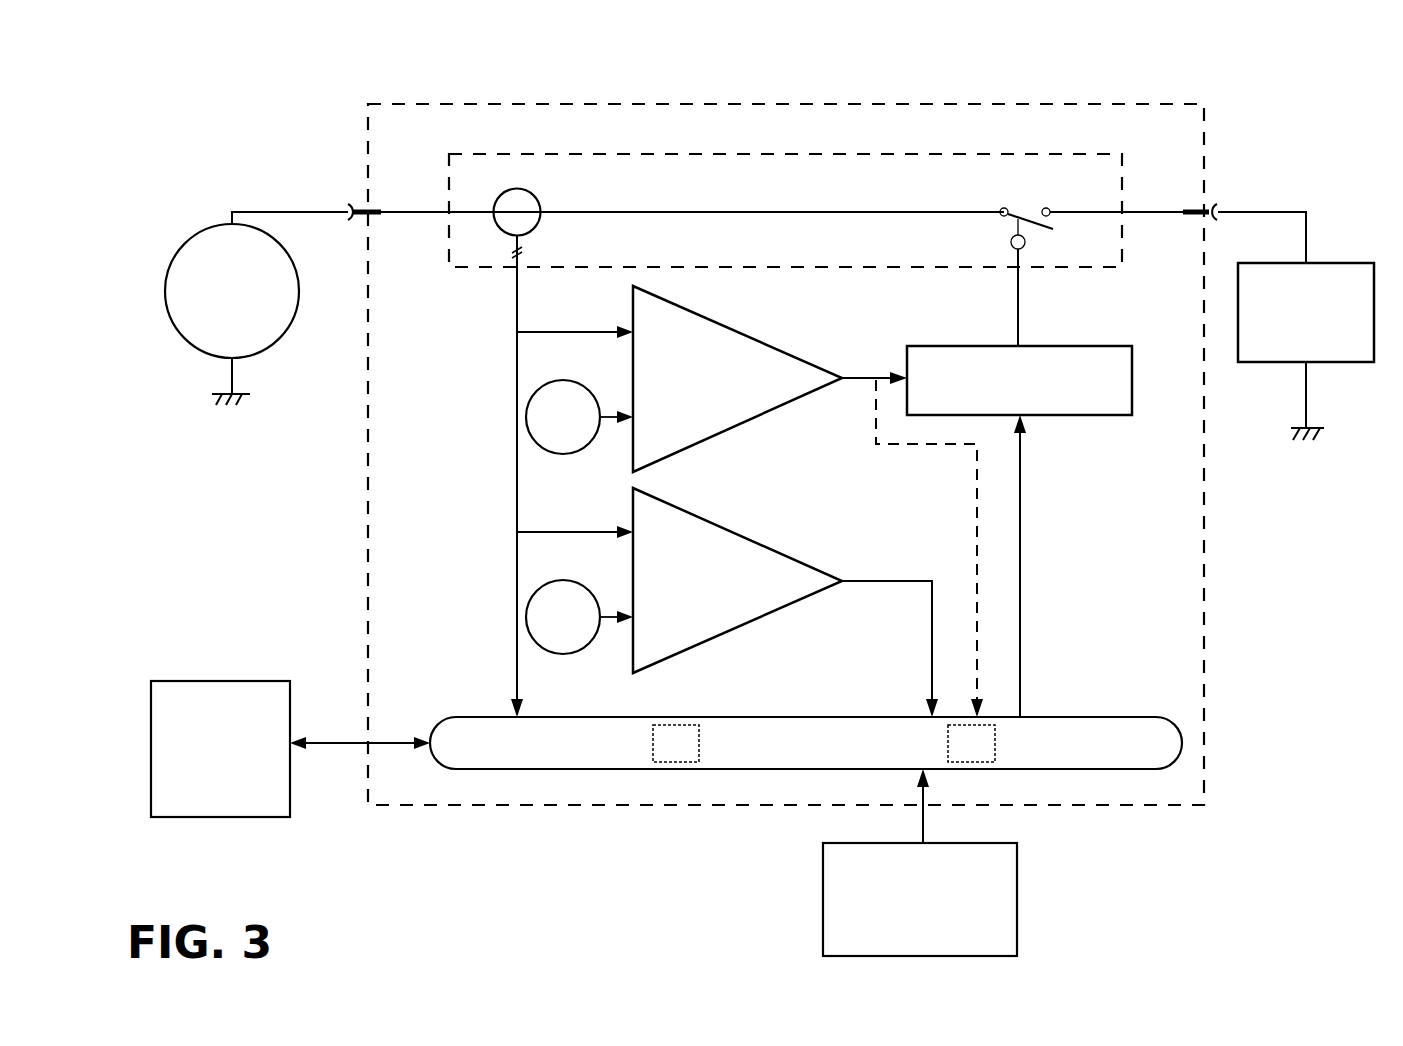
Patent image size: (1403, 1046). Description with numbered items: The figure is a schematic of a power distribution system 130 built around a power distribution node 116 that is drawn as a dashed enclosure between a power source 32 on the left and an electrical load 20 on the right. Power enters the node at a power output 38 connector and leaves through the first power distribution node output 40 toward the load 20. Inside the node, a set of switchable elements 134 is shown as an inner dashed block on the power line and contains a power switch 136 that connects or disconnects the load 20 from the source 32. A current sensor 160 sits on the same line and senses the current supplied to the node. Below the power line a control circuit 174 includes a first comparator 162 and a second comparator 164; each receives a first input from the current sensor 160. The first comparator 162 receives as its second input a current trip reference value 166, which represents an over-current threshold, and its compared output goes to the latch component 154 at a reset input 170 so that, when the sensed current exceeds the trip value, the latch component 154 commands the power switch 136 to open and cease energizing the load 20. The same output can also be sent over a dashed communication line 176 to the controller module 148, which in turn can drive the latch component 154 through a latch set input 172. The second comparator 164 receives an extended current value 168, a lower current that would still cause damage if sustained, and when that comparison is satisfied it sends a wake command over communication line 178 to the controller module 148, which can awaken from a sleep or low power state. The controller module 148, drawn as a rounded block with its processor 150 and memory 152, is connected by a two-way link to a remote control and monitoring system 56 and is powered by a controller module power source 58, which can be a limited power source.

The electrical load 20 is at (1324, 322).
The power source 32 is at (246, 304).
The power output 38 is at (1136, 205).
The first power distribution node output 40 is at (1224, 203).
The remote control and monitoring system 56 is at (236, 803).
The controller module power source 58 is at (1020, 898).
The power distribution node 116 is at (1135, 93).
The power distribution system 130 is at (804, 68).
The set of switchable elements 134 is at (996, 148).
The power switch 136 is at (1030, 217).
The controller module 148 is at (785, 772).
The processor 150 is at (692, 756).
The memory 152 is at (987, 756).
The latch component 154 is at (1034, 393).
The current sensor 160 is at (546, 186).
The first comparator 162 is at (704, 390).
The second comparator 164 is at (704, 595).
The current trip reference value 166 is at (580, 431).
The extended current value 168 is at (580, 631).
The reset input 170 is at (886, 355).
The latch set input 172 is at (1047, 426).
The control circuit 174 is at (492, 446).
The communication line 176 is at (975, 503).
The communication line 178 is at (905, 577).